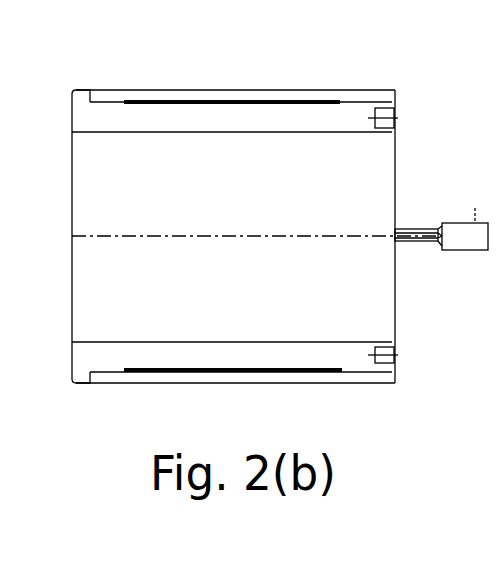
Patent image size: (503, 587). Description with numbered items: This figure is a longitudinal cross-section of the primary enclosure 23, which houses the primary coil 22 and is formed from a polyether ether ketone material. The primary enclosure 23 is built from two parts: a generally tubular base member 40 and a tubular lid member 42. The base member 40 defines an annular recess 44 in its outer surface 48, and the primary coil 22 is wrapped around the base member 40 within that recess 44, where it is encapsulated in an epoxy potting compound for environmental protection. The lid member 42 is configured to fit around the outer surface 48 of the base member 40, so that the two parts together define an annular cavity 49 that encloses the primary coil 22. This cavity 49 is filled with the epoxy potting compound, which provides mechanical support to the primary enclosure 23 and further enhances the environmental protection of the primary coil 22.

The base member 40 is at (88, 90).
The lid member 42 is at (145, 87).
The annular recess 44 is at (206, 91).
The annular cavity 49 is at (258, 97).
The primary coil 22 is at (312, 92).
The outer surface 48 is at (372, 99).
The primary enclosure 23 is at (122, 398).